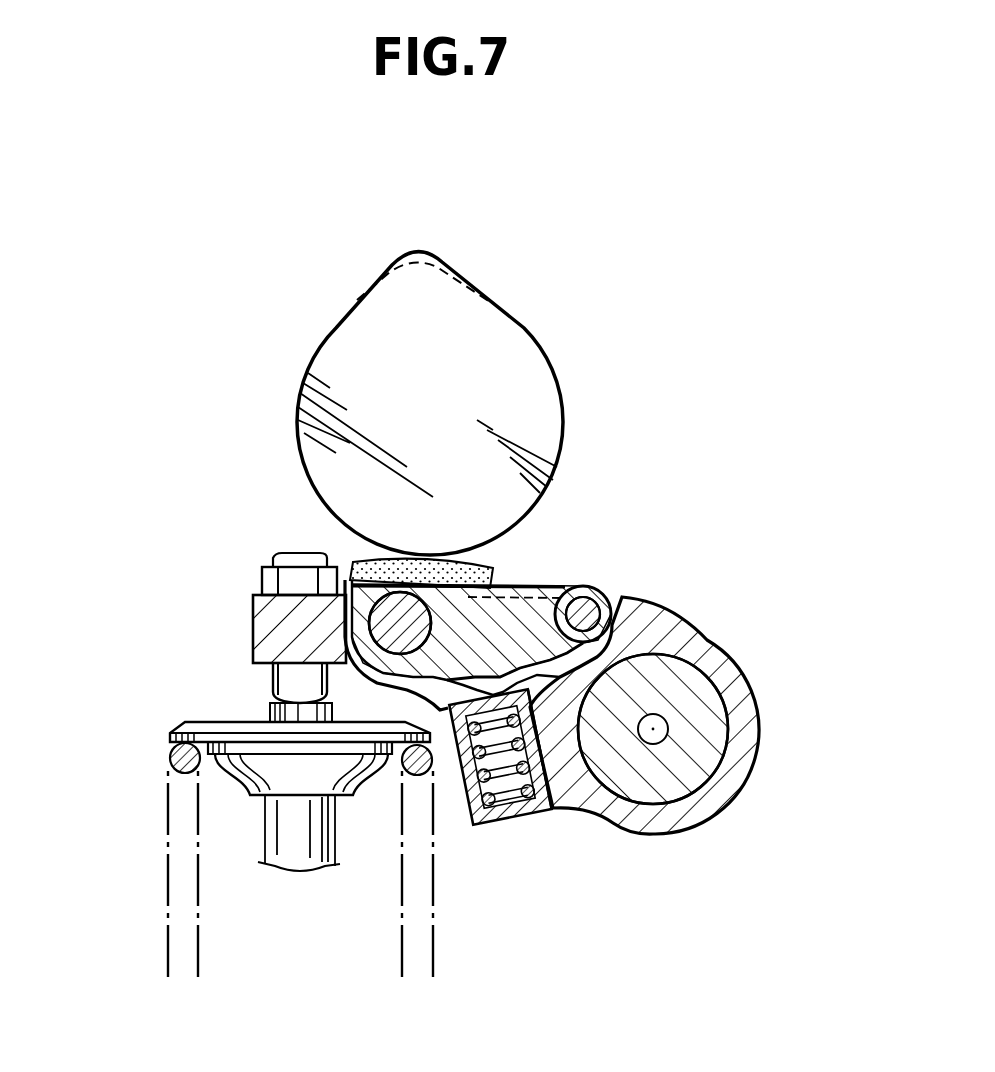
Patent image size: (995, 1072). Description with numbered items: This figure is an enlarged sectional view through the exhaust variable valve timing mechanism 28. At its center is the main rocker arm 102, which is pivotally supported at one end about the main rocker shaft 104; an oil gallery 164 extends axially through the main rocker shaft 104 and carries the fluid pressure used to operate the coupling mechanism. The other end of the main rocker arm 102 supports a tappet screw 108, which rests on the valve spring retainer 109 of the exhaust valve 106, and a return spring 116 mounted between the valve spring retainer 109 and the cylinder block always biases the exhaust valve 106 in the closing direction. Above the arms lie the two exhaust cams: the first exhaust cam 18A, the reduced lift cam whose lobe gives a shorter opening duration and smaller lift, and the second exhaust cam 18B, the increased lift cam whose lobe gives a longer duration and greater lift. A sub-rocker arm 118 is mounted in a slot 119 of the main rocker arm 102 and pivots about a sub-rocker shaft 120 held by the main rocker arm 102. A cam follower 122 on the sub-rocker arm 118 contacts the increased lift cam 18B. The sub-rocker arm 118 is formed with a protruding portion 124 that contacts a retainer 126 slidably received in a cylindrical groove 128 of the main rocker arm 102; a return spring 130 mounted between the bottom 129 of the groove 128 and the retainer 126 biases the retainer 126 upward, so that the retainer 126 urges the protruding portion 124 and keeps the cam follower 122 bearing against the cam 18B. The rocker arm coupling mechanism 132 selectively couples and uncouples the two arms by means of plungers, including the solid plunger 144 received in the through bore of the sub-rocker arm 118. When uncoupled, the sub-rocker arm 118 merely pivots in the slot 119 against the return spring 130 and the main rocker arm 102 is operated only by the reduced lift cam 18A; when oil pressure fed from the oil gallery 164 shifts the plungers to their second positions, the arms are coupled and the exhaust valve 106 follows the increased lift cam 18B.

The first exhaust cam 18A is at (366, 292).
The second exhaust cam 18B is at (372, 276).
The exhaust variable valve timing mechanism 28 is at (613, 570).
The main rocker arm 102 is at (253, 612).
The main rocker shaft 104 is at (707, 827).
The exhaust valve 106 is at (150, 805).
The tappet screw 108 is at (268, 680).
The valve spring retainer 109 is at (242, 722).
The return spring 116 is at (172, 752).
The sub-rocker arm 118 is at (552, 593).
The slot 119 is at (620, 608).
The sub-rocker shaft 120 is at (614, 598).
The cam follower 122 is at (363, 553).
The protruding portion 124 is at (478, 692).
The retainer 126 is at (723, 650).
The cylindrical groove 128 is at (484, 804).
The bottom 129 is at (508, 800).
The return spring 130 is at (540, 800).
The rocker arm coupling mechanism 132 is at (333, 547).
The solid plunger 144 is at (369, 622).
The oil gallery 164 is at (661, 728).